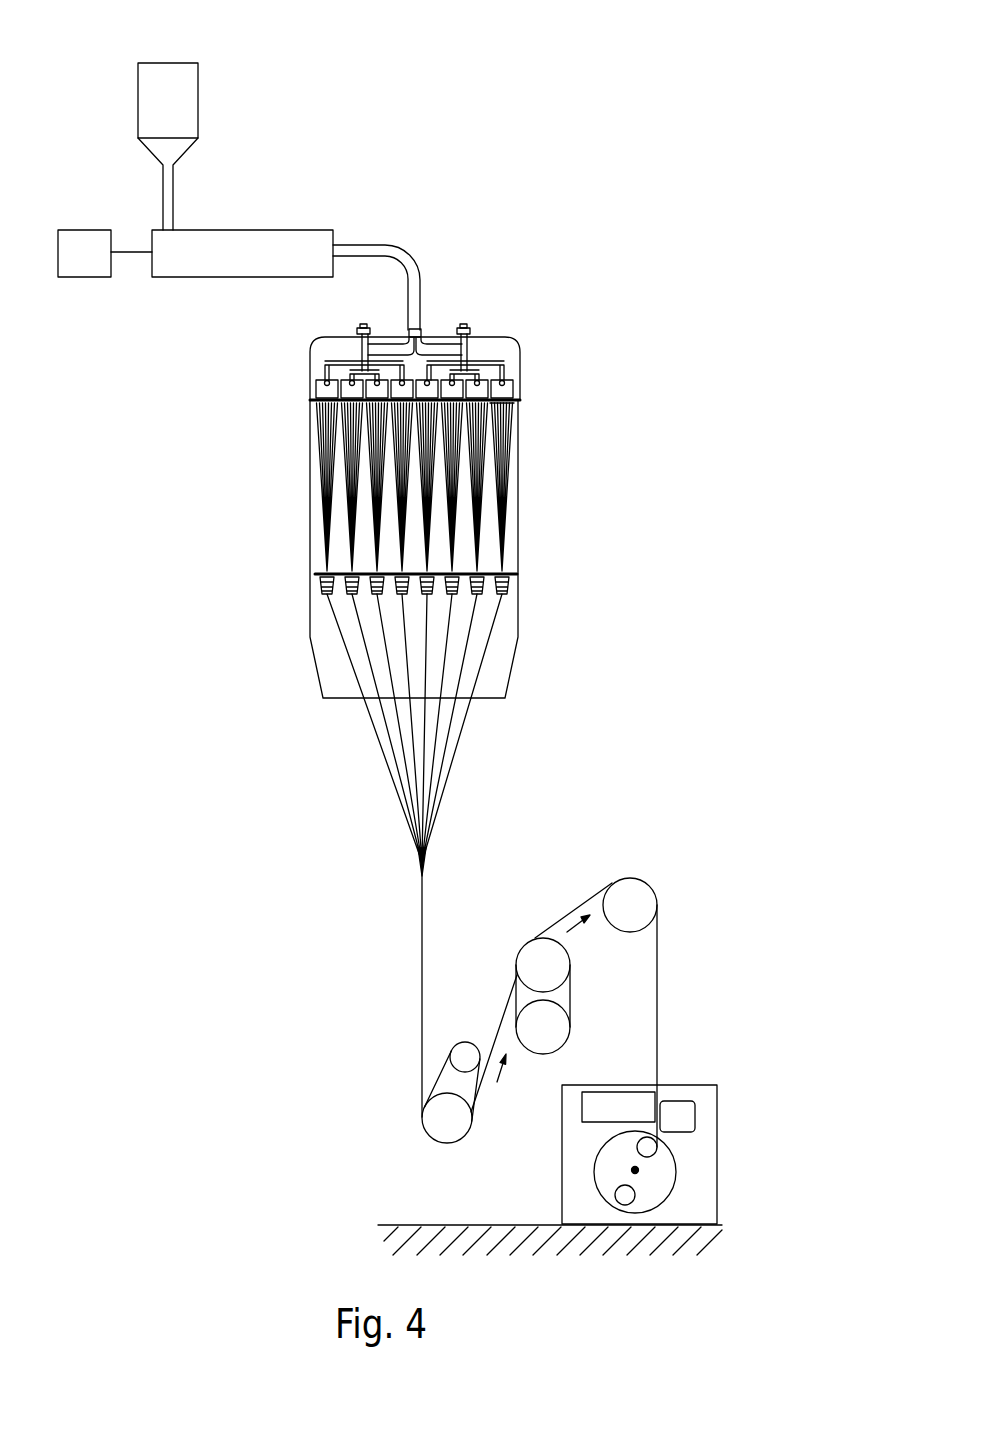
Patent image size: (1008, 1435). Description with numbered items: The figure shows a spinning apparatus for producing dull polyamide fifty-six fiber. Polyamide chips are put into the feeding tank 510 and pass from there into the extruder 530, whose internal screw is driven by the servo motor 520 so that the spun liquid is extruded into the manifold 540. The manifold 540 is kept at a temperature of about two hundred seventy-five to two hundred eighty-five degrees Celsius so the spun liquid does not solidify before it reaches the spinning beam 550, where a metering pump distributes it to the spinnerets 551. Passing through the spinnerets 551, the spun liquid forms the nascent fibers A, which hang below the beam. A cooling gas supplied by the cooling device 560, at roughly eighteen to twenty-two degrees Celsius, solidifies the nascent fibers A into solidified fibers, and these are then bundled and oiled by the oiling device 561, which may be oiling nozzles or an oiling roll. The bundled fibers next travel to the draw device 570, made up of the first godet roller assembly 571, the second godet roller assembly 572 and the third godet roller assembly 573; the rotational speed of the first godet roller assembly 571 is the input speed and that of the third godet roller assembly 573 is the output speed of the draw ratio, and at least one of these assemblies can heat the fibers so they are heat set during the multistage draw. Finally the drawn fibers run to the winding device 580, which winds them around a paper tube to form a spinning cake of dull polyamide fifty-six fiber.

The feeding tank 510 is at (185, 100).
The servo motor 520 is at (85, 233).
The extruder 530 is at (265, 235).
The manifold 540 is at (413, 298).
The spinning beam 550 is at (521, 363).
The spinnerets 551 is at (503, 389).
The nascent fibers A is at (508, 402).
The cooling device 560 is at (519, 517).
The oiling device 561 is at (508, 582).
The draw device 570 is at (657, 788).
The first godet roller assembly 571 is at (463, 1052).
The second godet roller assembly 572 is at (550, 950).
The third godet roller assembly 573 is at (637, 892).
The winding device 580 is at (720, 1155).